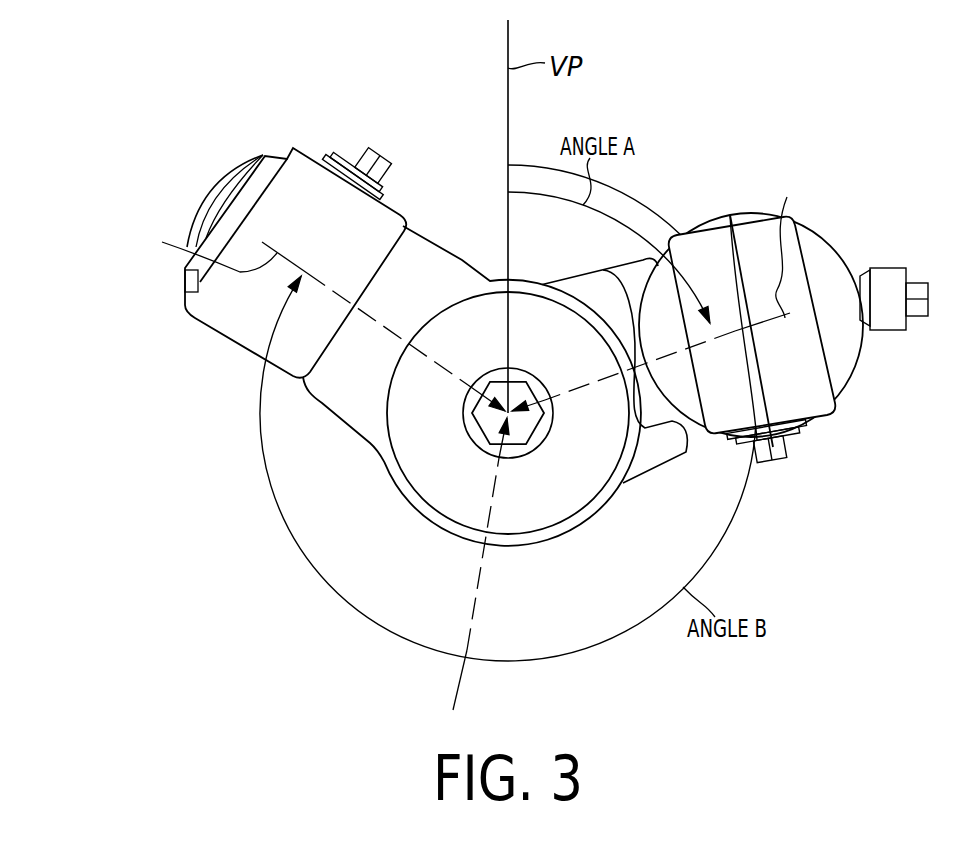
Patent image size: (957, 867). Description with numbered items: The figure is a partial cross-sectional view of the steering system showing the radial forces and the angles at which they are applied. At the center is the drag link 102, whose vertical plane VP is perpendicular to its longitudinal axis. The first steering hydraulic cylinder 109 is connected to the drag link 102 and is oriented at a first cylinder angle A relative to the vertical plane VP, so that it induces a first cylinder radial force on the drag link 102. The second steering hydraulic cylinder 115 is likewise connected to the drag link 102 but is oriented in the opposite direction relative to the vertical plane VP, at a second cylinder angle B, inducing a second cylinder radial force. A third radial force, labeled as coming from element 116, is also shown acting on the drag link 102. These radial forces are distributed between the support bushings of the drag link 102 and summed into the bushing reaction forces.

The drag link 102 is at (555, 490).
The first steering hydraulic cylinder 109 is at (808, 363).
The second steering hydraulic cylinder 115 is at (310, 180).
The pivot 116 is at (463, 670).